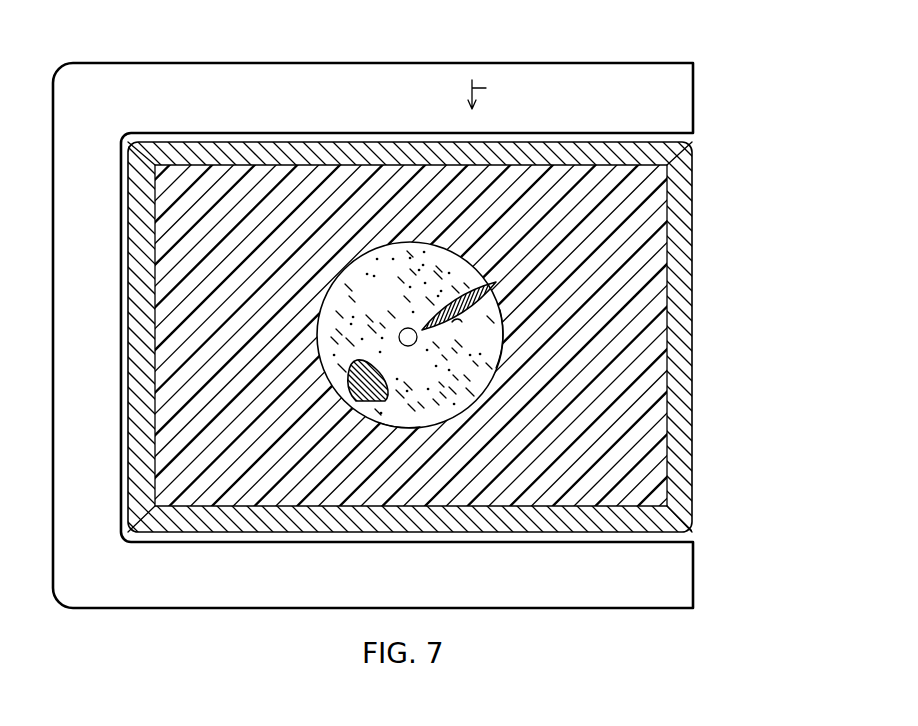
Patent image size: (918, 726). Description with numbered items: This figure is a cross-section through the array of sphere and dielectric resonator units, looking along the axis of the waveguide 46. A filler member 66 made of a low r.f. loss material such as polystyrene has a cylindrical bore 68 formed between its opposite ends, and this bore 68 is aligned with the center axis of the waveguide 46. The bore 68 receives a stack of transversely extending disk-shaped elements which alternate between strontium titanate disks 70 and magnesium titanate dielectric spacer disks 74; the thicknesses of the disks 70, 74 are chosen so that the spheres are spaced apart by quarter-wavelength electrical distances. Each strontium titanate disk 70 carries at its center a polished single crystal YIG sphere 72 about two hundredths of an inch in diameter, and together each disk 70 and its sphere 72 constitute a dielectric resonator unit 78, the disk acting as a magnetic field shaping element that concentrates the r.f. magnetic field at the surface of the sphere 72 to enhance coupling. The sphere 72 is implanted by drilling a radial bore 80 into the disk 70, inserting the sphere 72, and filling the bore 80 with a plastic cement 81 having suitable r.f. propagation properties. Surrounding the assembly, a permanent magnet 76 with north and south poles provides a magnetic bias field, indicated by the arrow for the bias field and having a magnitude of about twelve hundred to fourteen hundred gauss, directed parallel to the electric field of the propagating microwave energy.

The permanent magnet 76 is at (442, 67).
The waveguide 46 is at (264, 150).
The filler member 66 is at (338, 180).
The dielectric resonator unit 78 is at (359, 304).
The YIG sphere 72 is at (411, 347).
The plastic cement 81 is at (488, 286).
The radial bore 80 is at (456, 321).
The dielectric spacer disk 74 is at (358, 360).
The cylindrical bore 68 is at (504, 343).
The strontium titanate disk 70 is at (396, 434).